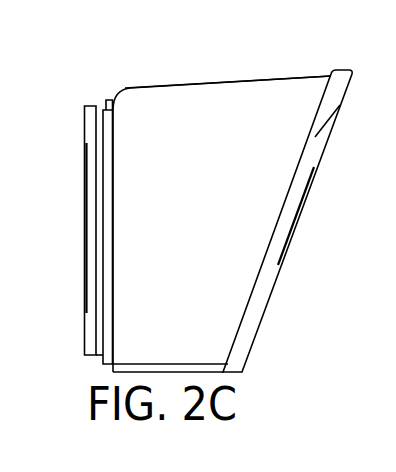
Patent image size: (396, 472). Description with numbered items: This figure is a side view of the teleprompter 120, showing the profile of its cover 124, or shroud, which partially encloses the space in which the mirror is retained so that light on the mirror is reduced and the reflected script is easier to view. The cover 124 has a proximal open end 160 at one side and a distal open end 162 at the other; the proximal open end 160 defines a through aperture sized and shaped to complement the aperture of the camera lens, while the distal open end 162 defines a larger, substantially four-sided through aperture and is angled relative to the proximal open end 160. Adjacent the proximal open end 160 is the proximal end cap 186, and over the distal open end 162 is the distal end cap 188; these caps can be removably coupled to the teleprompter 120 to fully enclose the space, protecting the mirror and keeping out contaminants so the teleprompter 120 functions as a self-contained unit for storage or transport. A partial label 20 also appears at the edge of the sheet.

The electronic device (partial label) 20 is at (14, 50).
The teleprompter 120 is at (268, 73).
The cover 124 is at (168, 100).
The proximal open end 160 is at (108, 297).
The distal open end 162 is at (252, 297).
The proximal end cap 186 is at (95, 172).
The distal end cap 188 is at (340, 105).